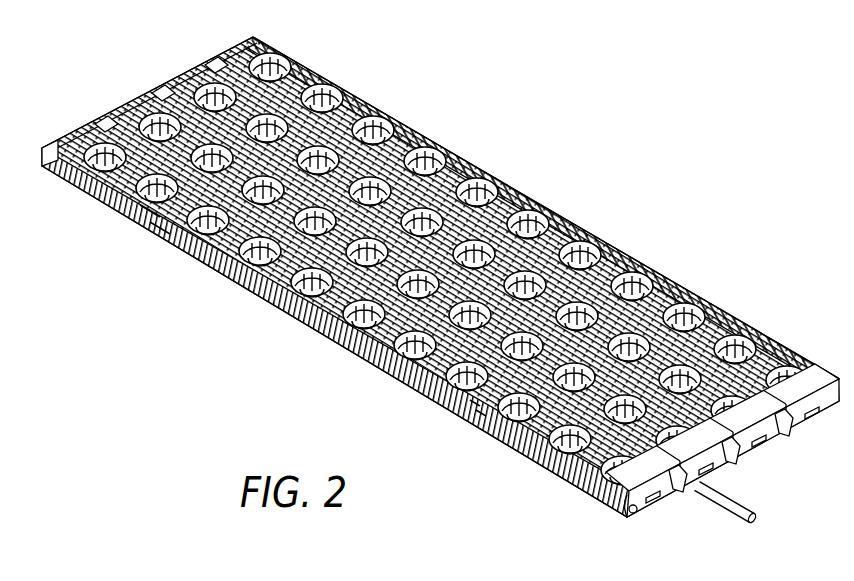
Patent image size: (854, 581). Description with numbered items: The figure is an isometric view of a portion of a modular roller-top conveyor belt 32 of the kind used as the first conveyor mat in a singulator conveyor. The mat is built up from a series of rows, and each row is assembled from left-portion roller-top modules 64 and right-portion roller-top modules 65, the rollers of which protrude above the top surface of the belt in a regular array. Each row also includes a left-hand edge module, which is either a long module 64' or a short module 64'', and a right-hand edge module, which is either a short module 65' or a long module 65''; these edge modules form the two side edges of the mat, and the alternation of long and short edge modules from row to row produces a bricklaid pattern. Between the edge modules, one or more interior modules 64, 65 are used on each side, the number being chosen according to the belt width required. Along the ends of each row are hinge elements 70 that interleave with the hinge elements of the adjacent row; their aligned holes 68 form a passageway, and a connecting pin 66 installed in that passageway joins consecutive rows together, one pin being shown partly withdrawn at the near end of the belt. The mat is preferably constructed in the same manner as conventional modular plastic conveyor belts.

The conveyor belt 32 is at (225, 32).
The hinge elements 70 is at (380, 107).
The left-portion roller-top modules 64 is at (334, 328).
The long left-hand edge module 64' is at (130, 234).
The short left-hand edge module 64'' is at (139, 94).
The right-portion roller-top modules 65 is at (452, 438).
The short right-hand edge module 65' is at (733, 448).
The long right-hand edge module 65'' is at (722, 383).
The connecting pins 66 is at (712, 498).
The holes 68 is at (637, 512).